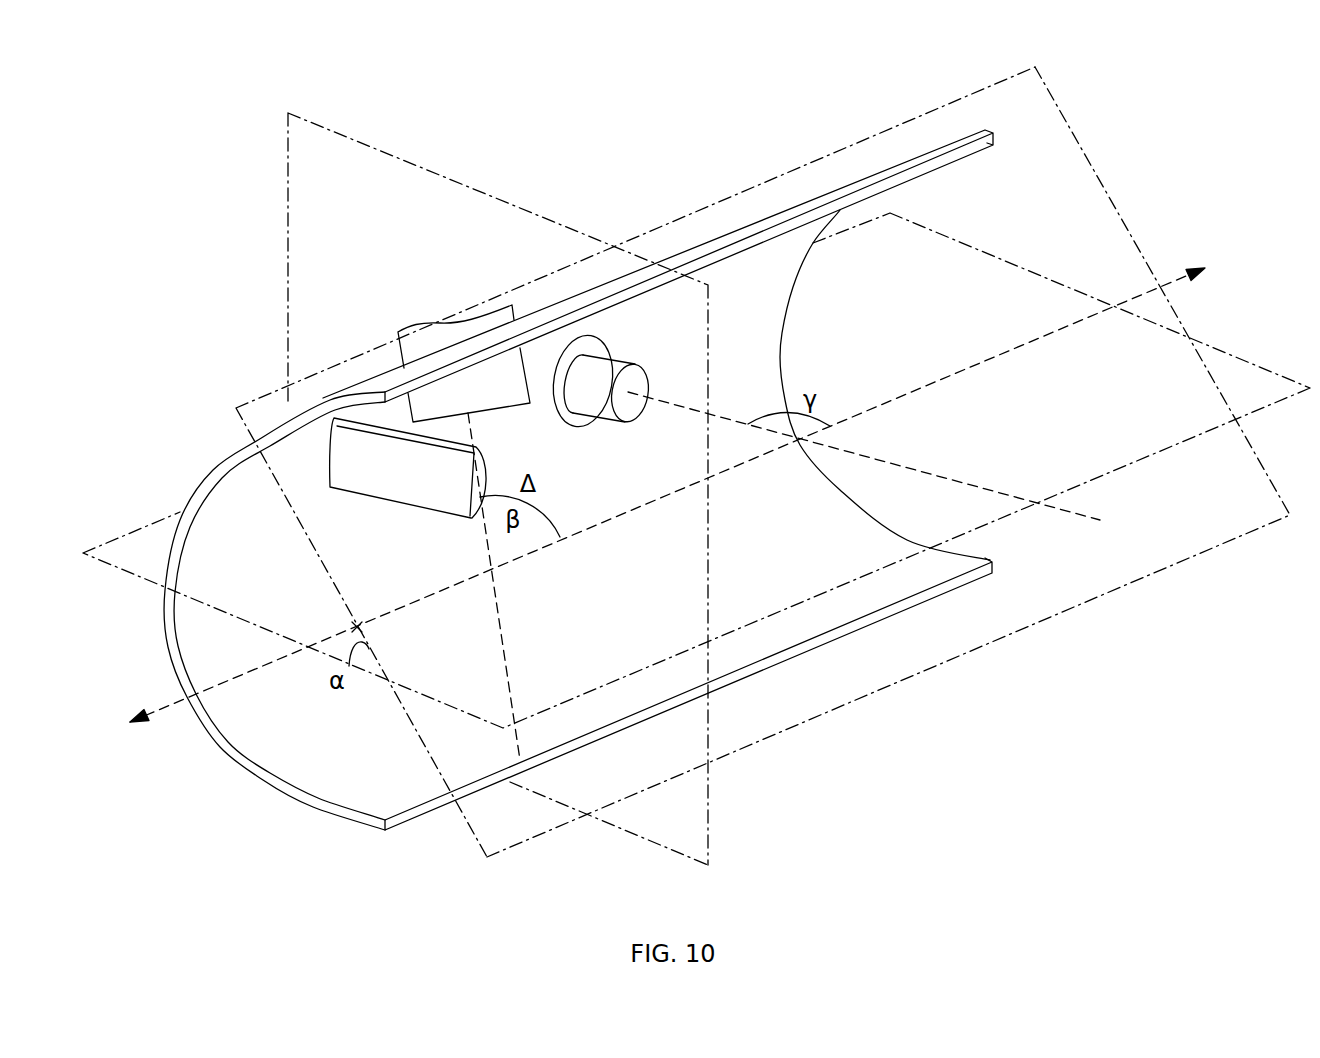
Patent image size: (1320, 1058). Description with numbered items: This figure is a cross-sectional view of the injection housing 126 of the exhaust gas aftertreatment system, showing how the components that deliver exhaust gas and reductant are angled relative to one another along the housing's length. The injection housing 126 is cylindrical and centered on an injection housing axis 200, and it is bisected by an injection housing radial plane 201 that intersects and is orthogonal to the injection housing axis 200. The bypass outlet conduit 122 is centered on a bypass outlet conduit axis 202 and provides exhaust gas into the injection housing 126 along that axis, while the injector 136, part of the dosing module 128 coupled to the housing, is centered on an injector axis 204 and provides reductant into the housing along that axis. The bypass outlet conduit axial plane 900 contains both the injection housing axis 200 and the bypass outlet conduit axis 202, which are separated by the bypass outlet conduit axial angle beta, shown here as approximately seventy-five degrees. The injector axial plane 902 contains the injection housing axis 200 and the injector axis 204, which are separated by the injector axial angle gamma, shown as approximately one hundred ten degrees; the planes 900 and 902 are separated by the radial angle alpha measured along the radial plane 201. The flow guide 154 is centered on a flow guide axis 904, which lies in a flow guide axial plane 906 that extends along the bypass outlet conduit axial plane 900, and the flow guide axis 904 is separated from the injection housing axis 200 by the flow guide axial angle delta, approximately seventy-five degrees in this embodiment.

The bypass outlet conduit 122 is at (427, 341).
The injection housing 126 is at (907, 158).
The dosing module 128 is at (613, 345).
The injector 136 is at (598, 395).
The flow guide 154 is at (373, 458).
The injection housing axis 200 is at (183, 698).
The injection housing radial plane 201 is at (427, 167).
The bypass outlet conduit axis 202 is at (507, 648).
The injector axis 204 is at (883, 463).
The bypass outlet conduit axial plane 900 is at (1063, 113).
The injector axial plane 902 is at (145, 576).
The flow guide axis 904 is at (500, 608).
The flow guide axial plane 906 is at (1110, 198).